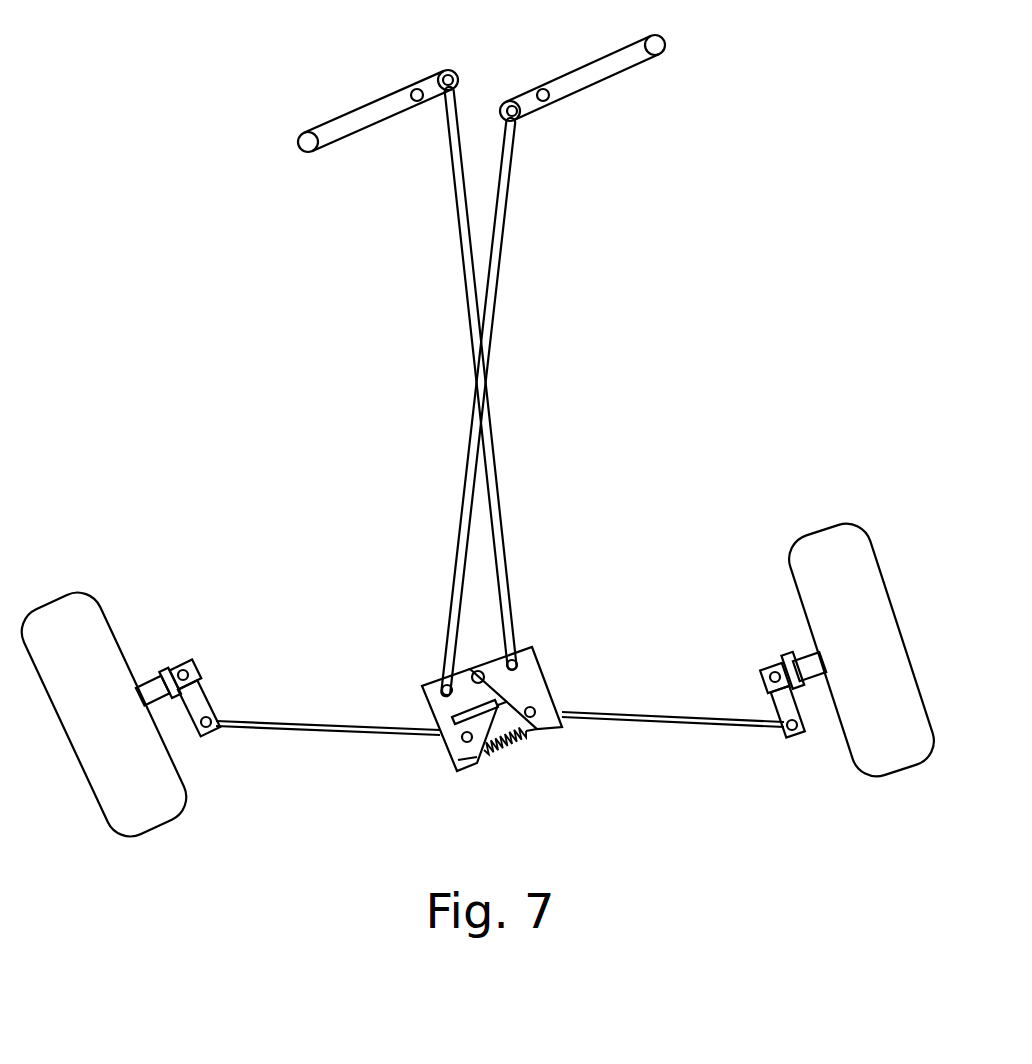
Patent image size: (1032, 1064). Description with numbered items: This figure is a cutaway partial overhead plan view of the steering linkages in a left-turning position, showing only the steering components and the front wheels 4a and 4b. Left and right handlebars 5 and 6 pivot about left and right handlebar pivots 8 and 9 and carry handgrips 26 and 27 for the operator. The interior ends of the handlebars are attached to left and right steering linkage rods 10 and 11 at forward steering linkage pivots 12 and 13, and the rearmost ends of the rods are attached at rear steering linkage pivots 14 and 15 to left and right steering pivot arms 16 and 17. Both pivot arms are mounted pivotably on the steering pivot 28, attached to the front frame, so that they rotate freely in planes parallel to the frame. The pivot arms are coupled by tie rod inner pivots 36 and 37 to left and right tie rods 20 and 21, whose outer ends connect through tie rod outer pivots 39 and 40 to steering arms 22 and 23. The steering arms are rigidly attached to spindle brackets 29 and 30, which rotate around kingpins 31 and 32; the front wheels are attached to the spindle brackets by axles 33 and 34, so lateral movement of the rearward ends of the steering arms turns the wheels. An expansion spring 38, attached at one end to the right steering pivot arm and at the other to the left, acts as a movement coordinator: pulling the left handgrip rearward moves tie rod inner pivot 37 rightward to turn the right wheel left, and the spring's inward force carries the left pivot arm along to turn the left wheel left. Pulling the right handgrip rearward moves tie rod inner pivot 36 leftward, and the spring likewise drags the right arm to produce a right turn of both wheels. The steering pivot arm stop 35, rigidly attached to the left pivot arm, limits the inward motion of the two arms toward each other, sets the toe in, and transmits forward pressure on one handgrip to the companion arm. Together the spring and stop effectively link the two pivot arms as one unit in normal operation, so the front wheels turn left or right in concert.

The left front wheel 4a is at (62, 620).
The right front wheel 4b is at (832, 567).
The left handlebar 5 is at (335, 133).
The right handlebar 6 is at (610, 67).
The left handlebar pivot 8 is at (413, 100).
The right handlebar pivot 9 is at (548, 100).
The left steering linkage rod 10 is at (466, 287).
The right steering linkage rod 11 is at (495, 278).
The forward steering linkage pivot 12 is at (443, 86).
The forward steering linkage pivot 13 is at (515, 116).
The rear steering linkage pivot 14 is at (442, 685).
The rear steering linkage pivot 15 is at (515, 660).
The left steering pivot arm 16 is at (429, 705).
The right steering pivot arm 17 is at (537, 678).
The left tie rod 20 is at (290, 728).
The right tie rod 21 is at (657, 720).
The left steering arm 22 is at (202, 700).
The right steering arm 23 is at (783, 702).
The left handgrip 26 is at (298, 143).
The right handgrip 27 is at (663, 51).
The steering pivot 28 is at (474, 671).
The left spindle bracket 29 is at (172, 665).
The right spindle bracket 30 is at (778, 667).
The left kingpin 31 is at (187, 670).
The right kingpin 32 is at (765, 672).
The left axle 33 is at (153, 688).
The right axle 34 is at (805, 665).
The steering pivot arm stop 35 is at (443, 735).
The tie rod inner pivot 36 is at (463, 742).
The tie rod inner pivot 37 is at (533, 717).
The expansion spring 38 is at (500, 750).
The tie rod outer pivot 39 is at (208, 730).
The tie rod outer pivot 40 is at (790, 735).